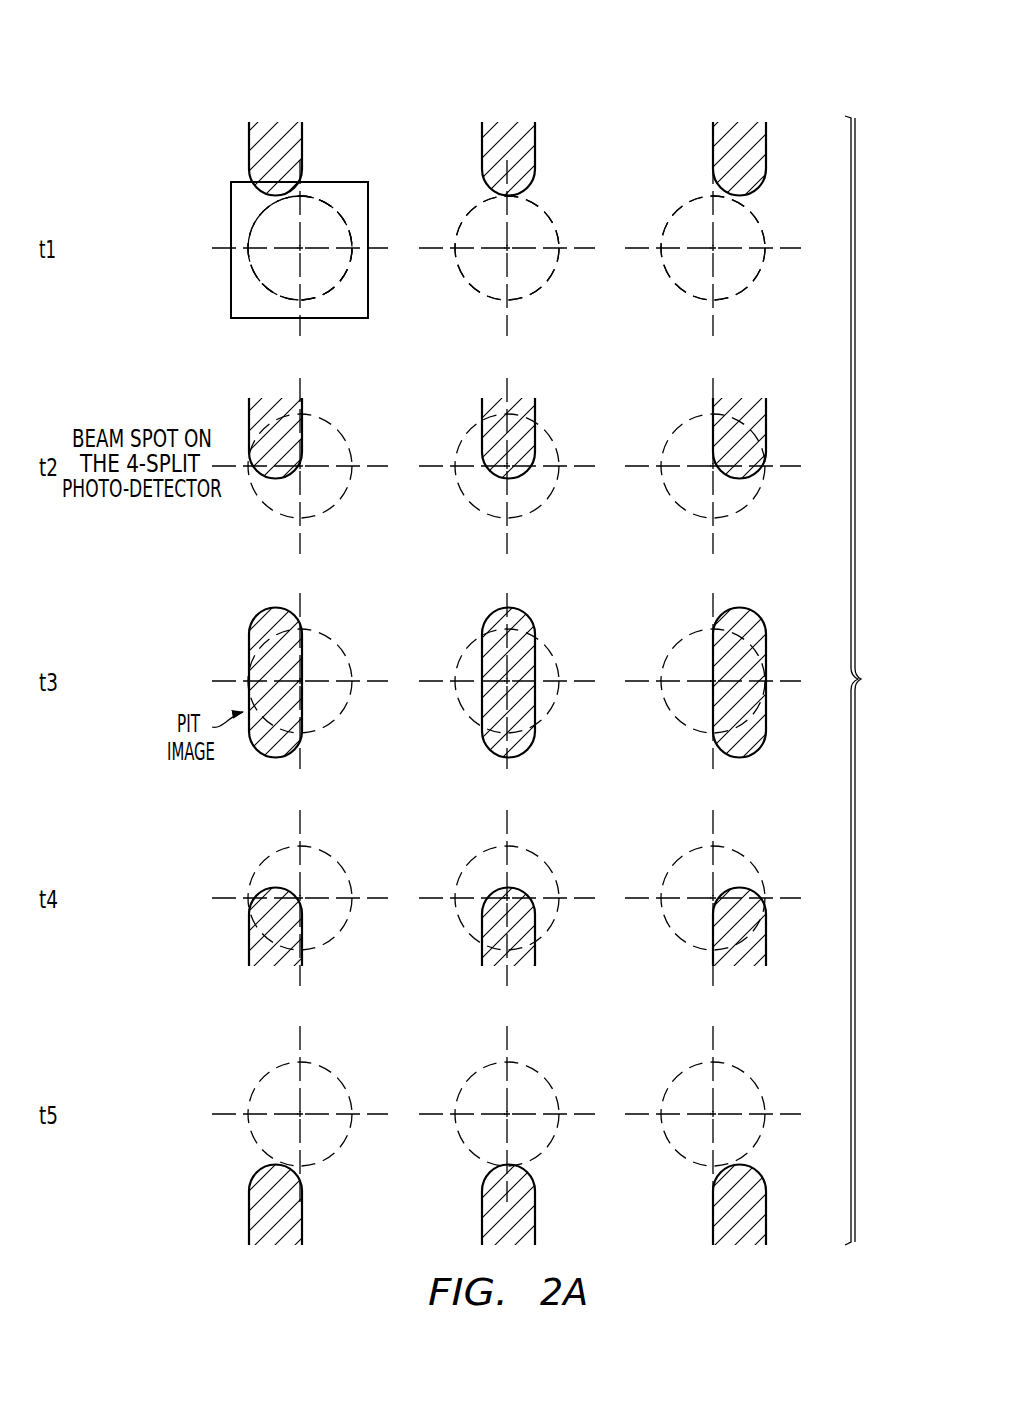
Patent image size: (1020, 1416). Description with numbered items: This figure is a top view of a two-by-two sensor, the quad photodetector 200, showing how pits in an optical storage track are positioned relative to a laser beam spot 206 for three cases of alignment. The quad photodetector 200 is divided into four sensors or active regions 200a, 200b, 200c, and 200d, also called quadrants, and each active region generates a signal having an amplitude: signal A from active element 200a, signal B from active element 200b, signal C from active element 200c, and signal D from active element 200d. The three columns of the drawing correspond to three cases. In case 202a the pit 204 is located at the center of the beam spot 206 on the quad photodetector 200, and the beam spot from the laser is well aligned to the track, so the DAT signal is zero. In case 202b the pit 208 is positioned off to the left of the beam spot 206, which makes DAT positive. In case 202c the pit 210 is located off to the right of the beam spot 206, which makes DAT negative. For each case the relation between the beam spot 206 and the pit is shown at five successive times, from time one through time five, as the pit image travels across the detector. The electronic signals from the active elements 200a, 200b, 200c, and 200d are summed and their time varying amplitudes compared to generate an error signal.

The quad photodetector 200 is at (336, 208).
The active region 200a is at (255, 234).
The active region 200b is at (344, 234).
The active region 200c is at (344, 264).
The active region 200d is at (255, 264).
The case 202a is at (441, 64).
The case 202b is at (219, 64).
The case 202c is at (788, 64).
The pit 204 is at (535, 150).
The beam spot 206 is at (320, 310).
The pit 208 is at (249, 157).
The pit 210 is at (766, 151).